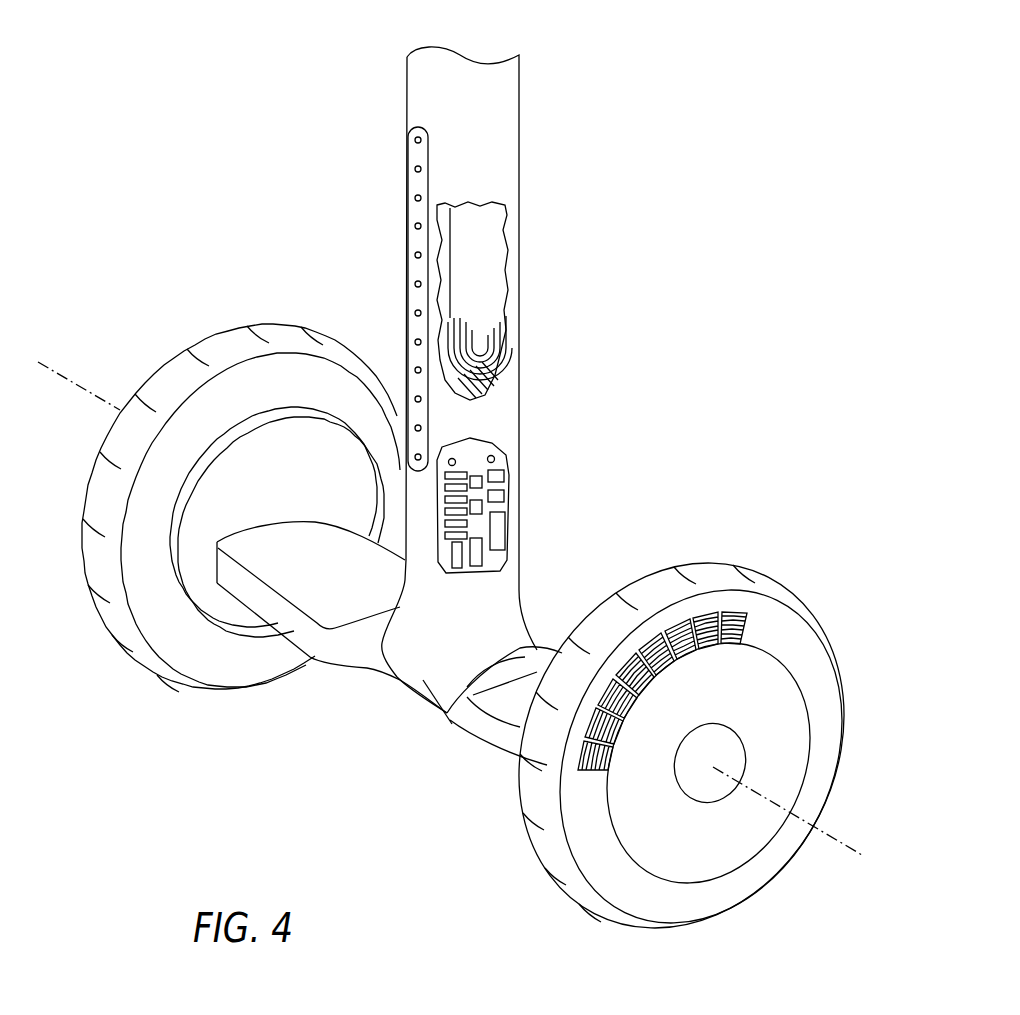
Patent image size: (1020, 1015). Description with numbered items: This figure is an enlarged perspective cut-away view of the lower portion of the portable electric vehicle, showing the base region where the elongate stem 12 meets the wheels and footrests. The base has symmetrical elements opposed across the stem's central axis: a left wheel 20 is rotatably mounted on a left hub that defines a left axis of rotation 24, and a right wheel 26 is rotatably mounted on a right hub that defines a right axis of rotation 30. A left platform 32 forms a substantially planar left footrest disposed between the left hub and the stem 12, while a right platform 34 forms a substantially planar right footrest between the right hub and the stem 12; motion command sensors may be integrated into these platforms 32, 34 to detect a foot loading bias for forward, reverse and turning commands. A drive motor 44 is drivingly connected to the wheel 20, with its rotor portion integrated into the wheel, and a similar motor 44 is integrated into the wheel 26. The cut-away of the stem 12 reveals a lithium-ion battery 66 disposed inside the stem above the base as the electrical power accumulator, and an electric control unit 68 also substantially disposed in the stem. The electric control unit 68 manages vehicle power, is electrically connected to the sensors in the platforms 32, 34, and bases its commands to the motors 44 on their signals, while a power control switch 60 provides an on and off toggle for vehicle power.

The stem 12 is at (523, 120).
The left wheel 20 is at (767, 577).
The left axis of rotation 24 is at (830, 827).
The right wheel 26 is at (92, 610).
The right axis of rotation 30 is at (57, 372).
The left platform 32 is at (465, 737).
The right platform 34 is at (320, 662).
The drive motor 44 is at (662, 622).
The power control switch 60 is at (414, 255).
The lithium-ion battery 66 is at (493, 267).
The electric control unit 68 is at (493, 462).